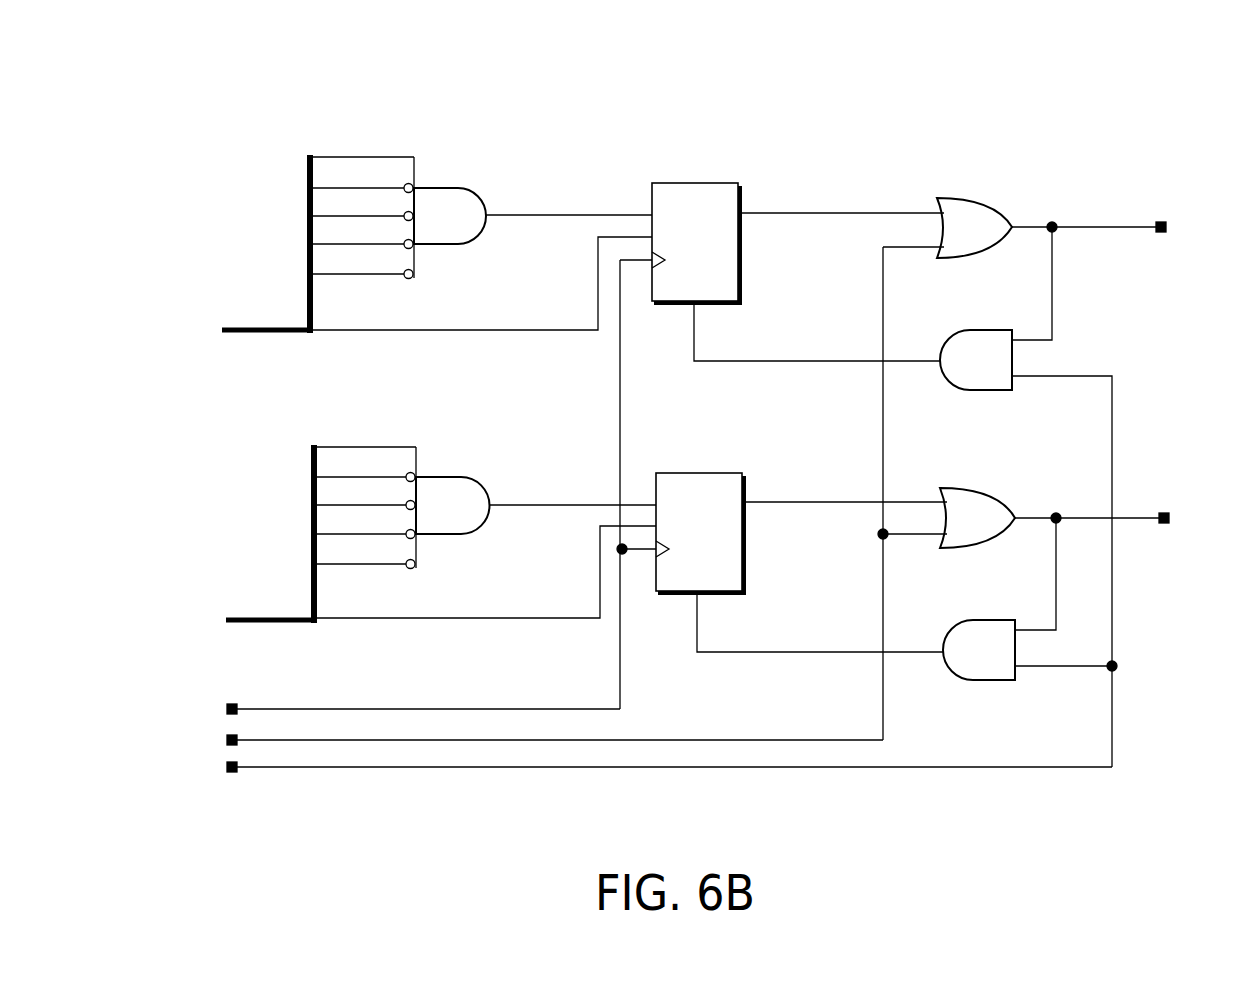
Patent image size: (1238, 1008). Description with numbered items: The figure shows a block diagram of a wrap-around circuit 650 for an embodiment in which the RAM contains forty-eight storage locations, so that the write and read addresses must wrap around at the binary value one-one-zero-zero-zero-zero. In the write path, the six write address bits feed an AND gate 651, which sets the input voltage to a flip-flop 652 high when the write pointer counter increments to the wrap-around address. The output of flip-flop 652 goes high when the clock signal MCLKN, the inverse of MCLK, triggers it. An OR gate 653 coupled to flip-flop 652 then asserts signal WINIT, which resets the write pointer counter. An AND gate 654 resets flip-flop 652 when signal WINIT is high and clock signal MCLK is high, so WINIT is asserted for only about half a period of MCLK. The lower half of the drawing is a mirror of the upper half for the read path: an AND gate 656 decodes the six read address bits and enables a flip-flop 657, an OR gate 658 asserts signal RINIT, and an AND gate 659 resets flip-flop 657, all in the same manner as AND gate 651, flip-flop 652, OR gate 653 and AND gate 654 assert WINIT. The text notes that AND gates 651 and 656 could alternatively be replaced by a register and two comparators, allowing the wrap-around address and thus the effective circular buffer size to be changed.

The wrap-around circuit 650 is at (318, 70).
The AND gate 651 is at (448, 187).
The flip-flop 652 is at (695, 183).
The OR gate 653 is at (962, 198).
The AND gate 654 is at (980, 330).
The AND gate 656 is at (450, 477).
The flip-flop 657 is at (697, 473).
The OR gate 658 is at (966, 488).
The AND gate 659 is at (985, 620).